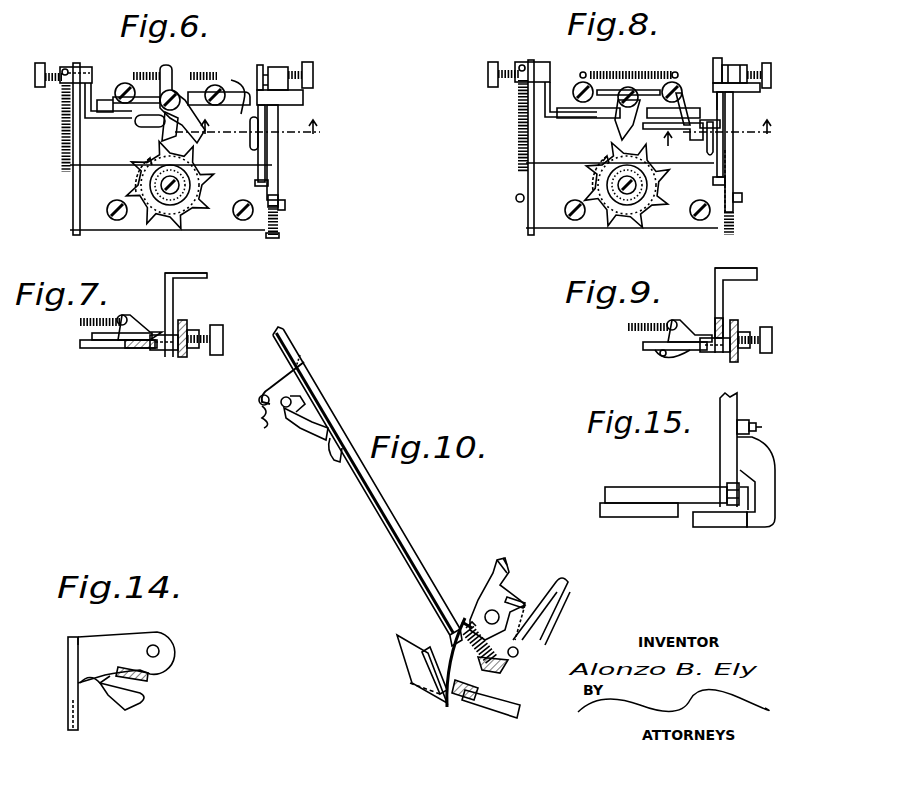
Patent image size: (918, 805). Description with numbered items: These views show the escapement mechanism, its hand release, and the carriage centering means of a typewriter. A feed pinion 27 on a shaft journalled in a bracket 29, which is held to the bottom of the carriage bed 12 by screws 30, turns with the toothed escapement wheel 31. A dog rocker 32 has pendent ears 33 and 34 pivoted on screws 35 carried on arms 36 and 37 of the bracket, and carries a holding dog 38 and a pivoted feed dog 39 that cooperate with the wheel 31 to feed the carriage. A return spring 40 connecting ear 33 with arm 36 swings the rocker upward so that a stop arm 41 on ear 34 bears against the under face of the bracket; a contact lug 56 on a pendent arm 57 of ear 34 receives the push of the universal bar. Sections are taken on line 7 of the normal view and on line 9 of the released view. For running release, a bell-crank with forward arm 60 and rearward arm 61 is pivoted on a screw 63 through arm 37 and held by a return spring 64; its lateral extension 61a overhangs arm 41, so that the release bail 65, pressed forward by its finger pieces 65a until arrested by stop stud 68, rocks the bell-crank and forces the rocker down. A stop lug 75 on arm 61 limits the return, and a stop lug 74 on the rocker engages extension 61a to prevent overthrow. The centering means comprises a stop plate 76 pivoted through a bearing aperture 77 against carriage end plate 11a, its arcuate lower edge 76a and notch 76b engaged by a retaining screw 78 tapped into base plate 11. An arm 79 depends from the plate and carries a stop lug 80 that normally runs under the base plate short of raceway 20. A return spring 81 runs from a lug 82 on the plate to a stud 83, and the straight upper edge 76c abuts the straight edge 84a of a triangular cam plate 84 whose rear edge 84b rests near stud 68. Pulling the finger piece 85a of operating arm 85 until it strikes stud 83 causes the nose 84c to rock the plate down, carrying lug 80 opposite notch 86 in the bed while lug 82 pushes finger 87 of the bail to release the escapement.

In FIG. 6, the section line 7 is at (252, 126).
In FIG. 8, the section line 9 is at (717, 135).
In FIG. 15, the carriage base plate 11 is at (615, 492).
In FIG. 15, the carriage end plate 11a is at (740, 405).
In FIG. 10, the carriage bed 12 is at (397, 637).
In FIG. 15, the raceway 20 is at (640, 512).
In FIG. 6, the feed pinion 27 is at (160, 229).
In FIG. 8, the feed pinion 27 is at (626, 184).
In FIG. 6, the bracket 29 is at (222, 225).
In FIG. 8, the bracket 29 is at (545, 226).
In FIG. 6, the screws 30 is at (115, 222).
In FIG. 8, the screws 30 is at (576, 222).
In FIG. 6, the escapement wheel 31 is at (132, 160).
In FIG. 8, the escapement wheel 31 is at (590, 178).
In FIG. 6, the dog rocker 32 is at (235, 90).
In FIG. 8, the dog rocker 32 is at (560, 112).
In FIG. 7, the dog rocker 32 is at (90, 349).
In FIG. 9, the dog rocker 32 is at (655, 351).
In FIG. 6, the pendent ear 33 is at (93, 86).
In FIG. 8, the pendent ear 33 is at (551, 85).
In FIG. 6, the pendent ear 34 is at (260, 65).
In FIG. 8, the pendent ear 34 is at (718, 60).
In FIG. 6, the screws 35 is at (55, 65).
In FIG. 8, the screws 35 is at (488, 80).
In FIG. 7, the screws 35 is at (206, 329).
In FIG. 9, the screws 35 is at (766, 328).
In FIG. 6, the bracket arm 36 is at (81, 190).
In FIG. 8, the bracket arm 36 is at (531, 75).
In FIG. 6, the bracket arm 37 is at (272, 178).
In FIG. 8, the bracket arm 37 is at (734, 165).
In FIG. 7, the bracket arm 37 is at (185, 358).
In FIG. 9, the bracket arm 37 is at (739, 358).
In FIG. 6, the holding dog 38 is at (205, 166).
In FIG. 8, the holding dog 38 is at (673, 129).
In FIG. 6, the feed dog 39 is at (156, 130).
In FIG. 8, the feed dog 39 is at (615, 125).
In FIG. 6, the return spring 40 is at (60, 101).
In FIG. 8, the return spring 40 is at (518, 105).
In FIG. 6, the stop arm 41 is at (251, 149).
In FIG. 8, the stop arm 41 is at (725, 178).
In FIG. 7, the stop arm 41 is at (150, 328).
In FIG. 9, the stop arm 41 is at (724, 332).
In FIG. 6, the contact lug 56 is at (303, 96).
In FIG. 8, the contact lug 56 is at (755, 93).
In FIG. 7, the contact lug 56 is at (207, 276).
In FIG. 9, the contact lug 56 is at (745, 268).
In FIG. 8, the pendent arm 57 is at (724, 110).
In FIG. 7, the pendent arm 57 is at (174, 300).
In FIG. 9, the pendent arm 57 is at (723, 300).
In FIG. 6, the bell-crank forward arm 60 is at (279, 237).
In FIG. 10, the bell-crank forward arm 60 is at (305, 365).
In FIG. 6, the bell-crank rearward arm 61 is at (278, 195).
In FIG. 8, the bell-crank rearward arm 61 is at (724, 192).
In FIG. 7, the bell-crank rearward arm 61 is at (170, 352).
In FIG. 9, the bell-crank rearward arm 61 is at (718, 353).
In FIG. 10, the bell-crank rearward arm 61 is at (312, 427).
In FIG. 6, the lateral extension 61a is at (238, 92).
In FIG. 8, the lateral extension 61a is at (707, 140).
In FIG. 7, the lateral extension 61a is at (148, 349).
In FIG. 9, the lateral extension 61a is at (692, 333).
In FIG. 10, the lateral extension 61a is at (332, 455).
In FIG. 6, the pivot screw 63 is at (285, 206).
In FIG. 8, the pivot screw 63 is at (743, 197).
In FIG. 8, the return spring 64 is at (726, 226).
In FIG. 10, the return spring 64 is at (262, 418).
In FIG. 10, the release bail 65 is at (370, 494).
In FIG. 10, the finger pieces 65a is at (560, 600).
In FIG. 10, the stop stud 68 is at (565, 578).
In FIG. 6, the stop lug 74 is at (278, 150).
In FIG. 8, the stop lug 74 is at (682, 92).
In FIG. 7, the stop lug 74 is at (125, 346).
In FIG. 9, the stop lug 74 is at (688, 351).
In FIG. 10, the stop lug 75 is at (296, 410).
In FIG. 14, the stop plate 76 is at (152, 640).
In FIG. 10, the stop plate 76 is at (520, 654).
In FIG. 15, the arcuate lower edge 76a is at (735, 486).
In FIG. 14, the arcuate lower edge 76a is at (112, 702).
In FIG. 14, the notch 76b is at (105, 680).
In FIG. 14, the straight upper edge 76c is at (84, 637).
In FIG. 10, the straight upper edge 76c is at (556, 585).
In FIG. 14, the bearing aperture 77 is at (160, 652).
In FIG. 15, the retaining screw 78 is at (750, 515).
In FIG. 10, the retaining screw 78 is at (470, 700).
In FIG. 15, the stop-carrying arm 79 is at (755, 460).
In FIG. 14, the stop-carrying arm 79 is at (68, 685).
In FIG. 10, the stop-carrying arm 79 is at (445, 705).
In FIG. 15, the stop lug 80 is at (725, 522).
In FIG. 14, the stop lug 80 is at (68, 722).
In FIG. 10, the stop lug 80 is at (425, 660).
In FIG. 15, the return spring 81 is at (763, 440).
In FIG. 10, the return spring 81 is at (466, 640).
In FIG. 14, the spring anchor lug 82 is at (149, 677).
In FIG. 10, the spring anchor lug 82 is at (508, 668).
In FIG. 15, the stud 83 is at (756, 424).
In FIG. 10, the stud 83 is at (462, 622).
In FIG. 10, the cam plate 84 is at (482, 598).
In FIG. 10, the straight edge 84a is at (515, 596).
In FIG. 10, the rear edge 84b is at (527, 605).
In FIG. 10, the nose portion 84c is at (470, 620).
In FIG. 10, the operating arm 85 is at (495, 562).
In FIG. 10, the finger piece 85a is at (506, 556).
In FIG. 10, the notch 86 is at (412, 684).
In FIG. 10, the finger 87 is at (470, 697).